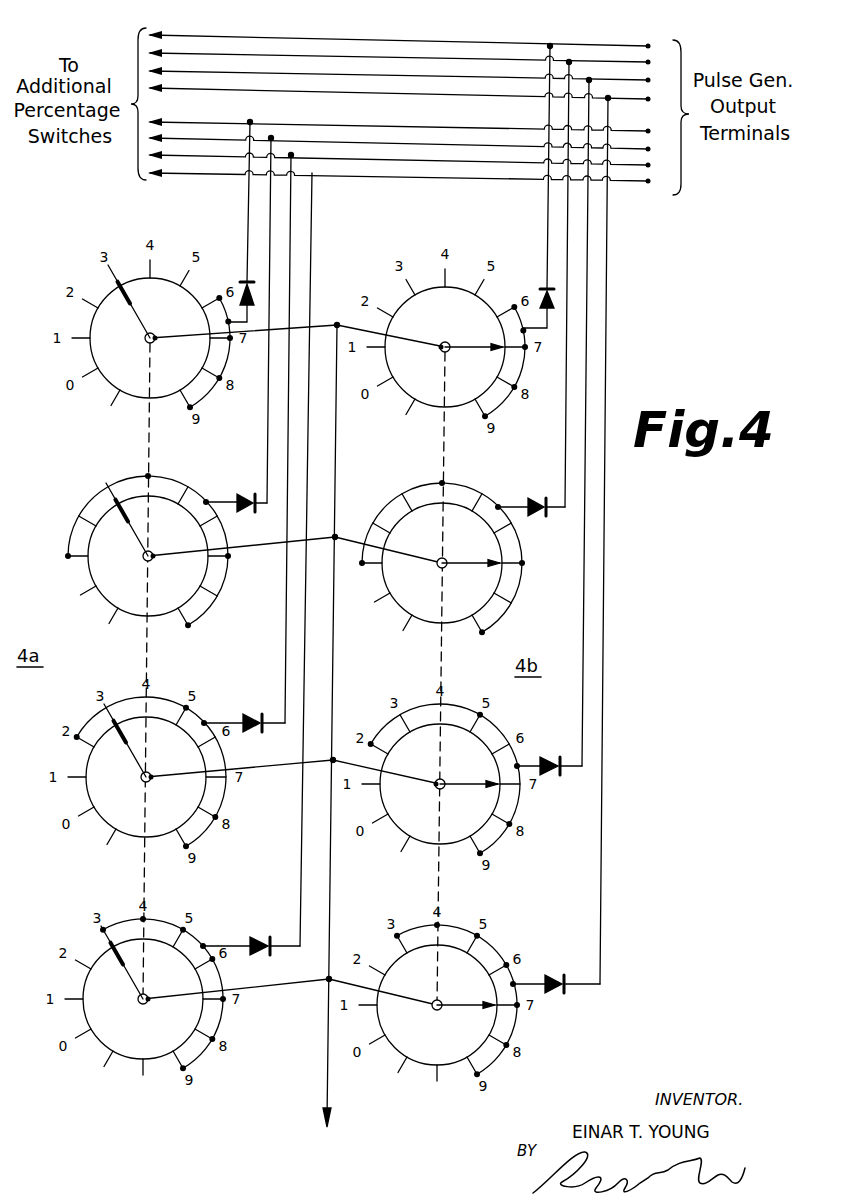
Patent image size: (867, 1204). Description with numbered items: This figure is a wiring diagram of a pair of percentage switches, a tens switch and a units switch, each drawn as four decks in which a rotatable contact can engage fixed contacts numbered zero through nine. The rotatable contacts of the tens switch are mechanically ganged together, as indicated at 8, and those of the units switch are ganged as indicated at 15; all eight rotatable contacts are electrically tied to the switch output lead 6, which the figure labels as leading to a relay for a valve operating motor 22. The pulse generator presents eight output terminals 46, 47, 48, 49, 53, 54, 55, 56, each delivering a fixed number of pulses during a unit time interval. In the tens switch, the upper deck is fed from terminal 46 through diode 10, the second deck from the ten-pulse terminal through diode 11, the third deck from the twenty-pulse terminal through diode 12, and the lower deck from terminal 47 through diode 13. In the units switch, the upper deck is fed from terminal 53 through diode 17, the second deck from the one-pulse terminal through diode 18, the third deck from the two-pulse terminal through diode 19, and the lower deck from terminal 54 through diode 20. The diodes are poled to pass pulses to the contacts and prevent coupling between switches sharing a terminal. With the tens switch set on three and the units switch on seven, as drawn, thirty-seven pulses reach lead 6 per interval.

The switch output lead 6 is at (327, 1057).
The mechanical ganging of rotatable contacts 8 is at (147, 562).
The diode 10 is at (243, 282).
The diode 11 is at (240, 493).
The diode 12 is at (247, 714).
The diode 13 is at (253, 936).
The mechanical ganging of rotatable contacts 15 is at (445, 583).
The diode 17 is at (542, 285).
The diode 18 is at (532, 497).
The diode 19 is at (547, 755).
The diode 20 is at (548, 974).
The valve operating motor 22 is at (326, 1168).
The pulse generator output terminal 46 is at (648, 131).
The pulse generator output terminal 47 is at (648, 181).
The pulse generator output terminal 48 is at (648, 165).
The pulse generator output terminal 49 is at (648, 149).
The pulse generator output terminal 53 is at (648, 46).
The pulse generator output terminal 54 is at (648, 99).
The pulse generator output terminal 55 is at (648, 80).
The pulse generator output terminal 56 is at (648, 62).